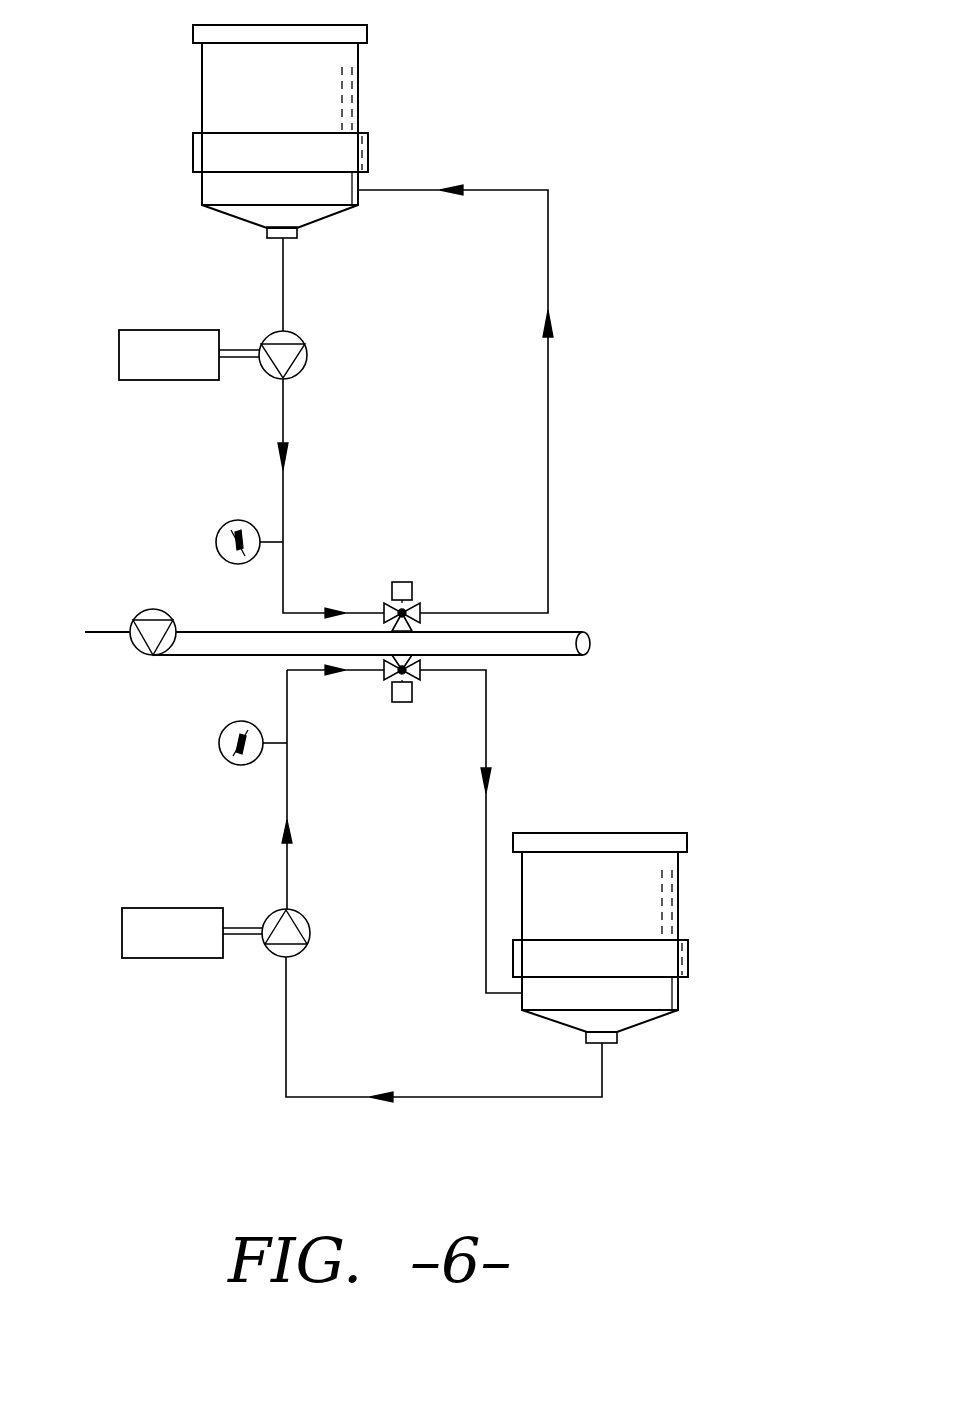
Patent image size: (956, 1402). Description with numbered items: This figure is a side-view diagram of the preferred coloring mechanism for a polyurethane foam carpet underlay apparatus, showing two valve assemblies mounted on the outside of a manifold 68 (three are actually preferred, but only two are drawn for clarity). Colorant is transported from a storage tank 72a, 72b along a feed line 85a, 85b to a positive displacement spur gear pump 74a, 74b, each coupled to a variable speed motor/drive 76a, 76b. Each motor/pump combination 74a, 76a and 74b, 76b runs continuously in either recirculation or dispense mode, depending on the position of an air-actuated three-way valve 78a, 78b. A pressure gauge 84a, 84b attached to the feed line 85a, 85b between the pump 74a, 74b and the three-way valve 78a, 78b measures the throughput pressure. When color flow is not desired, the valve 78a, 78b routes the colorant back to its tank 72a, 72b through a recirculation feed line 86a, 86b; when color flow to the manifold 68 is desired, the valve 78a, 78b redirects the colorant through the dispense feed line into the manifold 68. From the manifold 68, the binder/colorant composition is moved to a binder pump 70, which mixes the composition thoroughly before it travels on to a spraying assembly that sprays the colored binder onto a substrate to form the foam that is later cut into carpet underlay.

The manifold 68 is at (590, 632).
The binder pump 70 is at (143, 612).
The storage tank 72a is at (202, 100).
The storage tank 72b is at (680, 903).
The positive displacement spur gear pump 74a is at (268, 332).
The positive displacement spur gear pump 74b is at (275, 957).
The variable speed motor/drive 76a is at (145, 330).
The variable speed motor/drive 76b is at (147, 958).
The 3-way valve 78a is at (402, 582).
The 3-way valve 78b is at (403, 703).
The pressure gauge 84a is at (236, 520).
The pressure gauge 84b is at (238, 765).
The feed line 85a is at (283, 420).
The feed line 85b is at (286, 868).
The recirculation feed line 86a is at (548, 490).
The recirculation feed line 86b is at (486, 707).